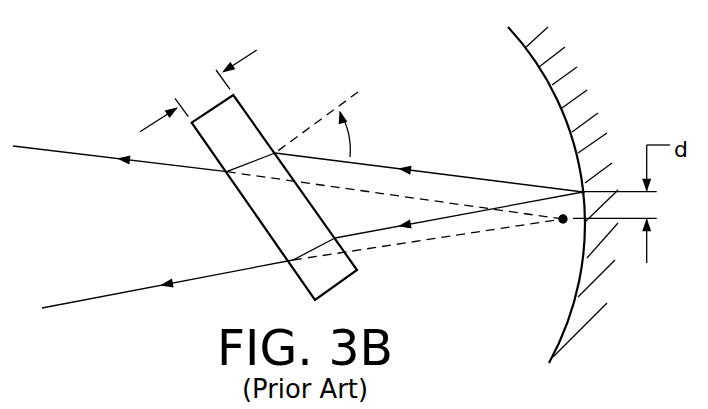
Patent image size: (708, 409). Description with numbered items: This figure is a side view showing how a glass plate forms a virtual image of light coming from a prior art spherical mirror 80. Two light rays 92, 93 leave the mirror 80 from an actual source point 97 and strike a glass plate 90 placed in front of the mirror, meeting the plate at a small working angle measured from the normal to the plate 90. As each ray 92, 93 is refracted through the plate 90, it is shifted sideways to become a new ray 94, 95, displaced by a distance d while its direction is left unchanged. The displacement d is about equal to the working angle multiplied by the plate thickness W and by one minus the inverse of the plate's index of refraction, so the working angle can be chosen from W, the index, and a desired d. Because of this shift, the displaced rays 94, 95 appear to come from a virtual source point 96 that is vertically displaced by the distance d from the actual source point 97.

The spherical mirror 80 is at (528, 55).
The glass plate 90 is at (260, 123).
The light ray 92 is at (438, 172).
The light ray 93 is at (383, 227).
The new ray 94 is at (47, 147).
The new ray 95 is at (92, 297).
The virtual source point 96 is at (560, 224).
The actual source point 97 is at (582, 190).